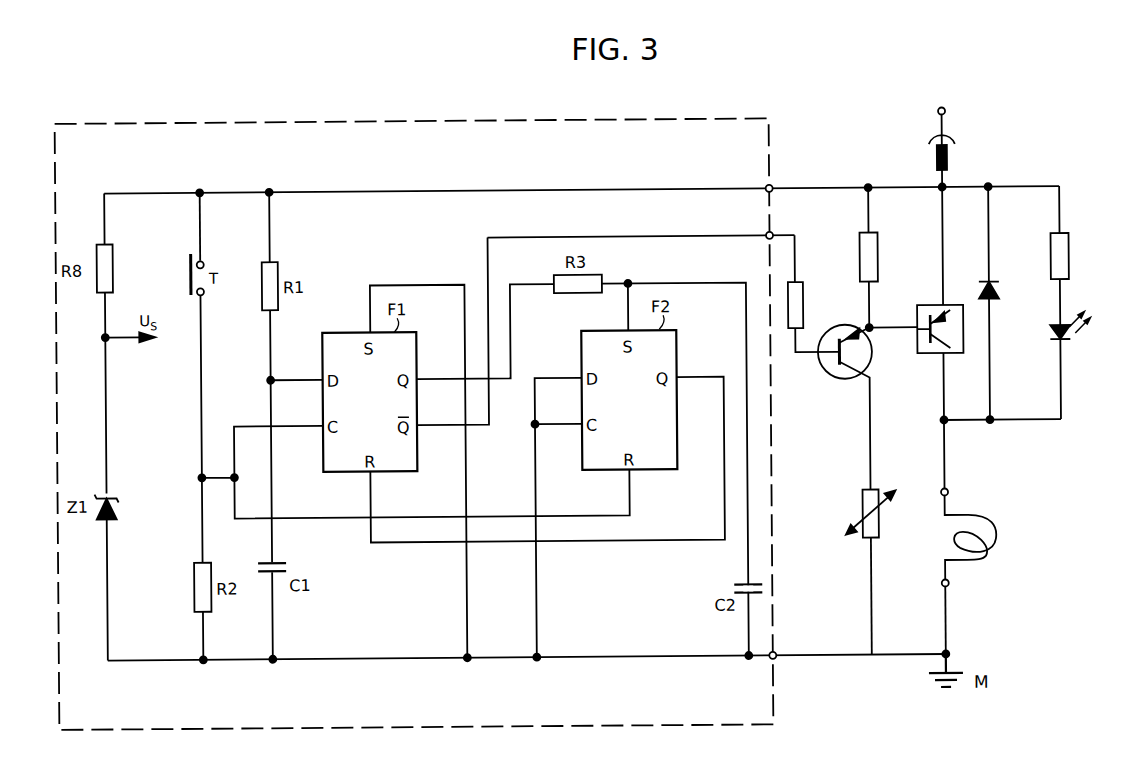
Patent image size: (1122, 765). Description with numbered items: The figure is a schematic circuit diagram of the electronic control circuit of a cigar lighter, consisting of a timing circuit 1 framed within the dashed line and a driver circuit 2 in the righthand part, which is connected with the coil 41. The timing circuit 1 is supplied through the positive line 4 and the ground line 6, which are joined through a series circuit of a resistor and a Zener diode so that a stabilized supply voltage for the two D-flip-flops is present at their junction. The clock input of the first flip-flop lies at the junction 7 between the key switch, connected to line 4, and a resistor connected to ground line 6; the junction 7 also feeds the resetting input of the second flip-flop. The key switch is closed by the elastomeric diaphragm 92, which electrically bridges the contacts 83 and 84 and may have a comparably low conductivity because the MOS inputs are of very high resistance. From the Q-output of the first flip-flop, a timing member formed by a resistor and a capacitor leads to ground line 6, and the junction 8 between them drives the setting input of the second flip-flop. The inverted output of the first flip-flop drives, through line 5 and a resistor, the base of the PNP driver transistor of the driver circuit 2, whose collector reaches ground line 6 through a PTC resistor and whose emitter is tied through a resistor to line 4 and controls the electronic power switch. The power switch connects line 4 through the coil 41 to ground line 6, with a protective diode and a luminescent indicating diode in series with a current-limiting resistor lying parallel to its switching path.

The timing circuit 1 is at (396, 720).
The driver circuit 2 is at (1037, 465).
The line 4 is at (797, 189).
The line 5 is at (785, 238).
The line 6 is at (794, 656).
The junction 7 is at (198, 477).
The junction 8 is at (629, 282).
The coil 41 is at (987, 563).
The contact 83 is at (205, 258).
The contact 84 is at (206, 291).
The diaphragm 92 is at (188, 262).